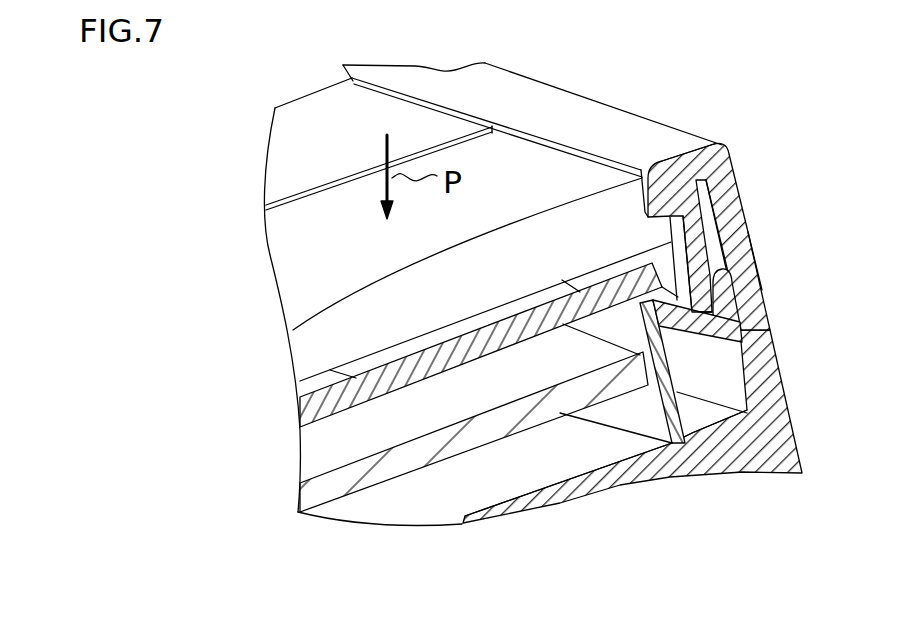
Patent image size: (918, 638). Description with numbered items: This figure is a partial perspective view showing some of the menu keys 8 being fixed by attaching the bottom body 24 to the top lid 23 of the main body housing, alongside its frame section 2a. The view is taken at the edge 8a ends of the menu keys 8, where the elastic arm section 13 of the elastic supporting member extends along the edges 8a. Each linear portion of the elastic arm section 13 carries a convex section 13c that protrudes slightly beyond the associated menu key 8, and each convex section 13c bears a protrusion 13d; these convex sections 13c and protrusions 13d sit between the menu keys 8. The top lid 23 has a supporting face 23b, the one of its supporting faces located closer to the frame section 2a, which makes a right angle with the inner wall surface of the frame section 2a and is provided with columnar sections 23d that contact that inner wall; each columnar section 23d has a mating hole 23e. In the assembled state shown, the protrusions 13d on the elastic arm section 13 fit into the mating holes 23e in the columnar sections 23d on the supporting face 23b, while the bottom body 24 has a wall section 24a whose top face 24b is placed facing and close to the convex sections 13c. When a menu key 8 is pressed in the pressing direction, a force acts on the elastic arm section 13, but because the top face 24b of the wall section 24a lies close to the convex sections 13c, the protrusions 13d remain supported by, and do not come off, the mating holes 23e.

The frame section 2a is at (640, 128).
The menu key 8 is at (306, 232).
The edge 8a is at (697, 207).
The elastic arm section 13 is at (681, 350).
The convex section 13c is at (705, 322).
The protrusion 13d is at (724, 289).
The top lid 23 is at (604, 100).
The supporting face 23b is at (672, 150).
The columnar section 23d is at (733, 215).
The mating hole 23e is at (732, 243).
The bottom body 24 is at (768, 480).
The wall section 24a is at (772, 453).
The top face 24b is at (742, 352).